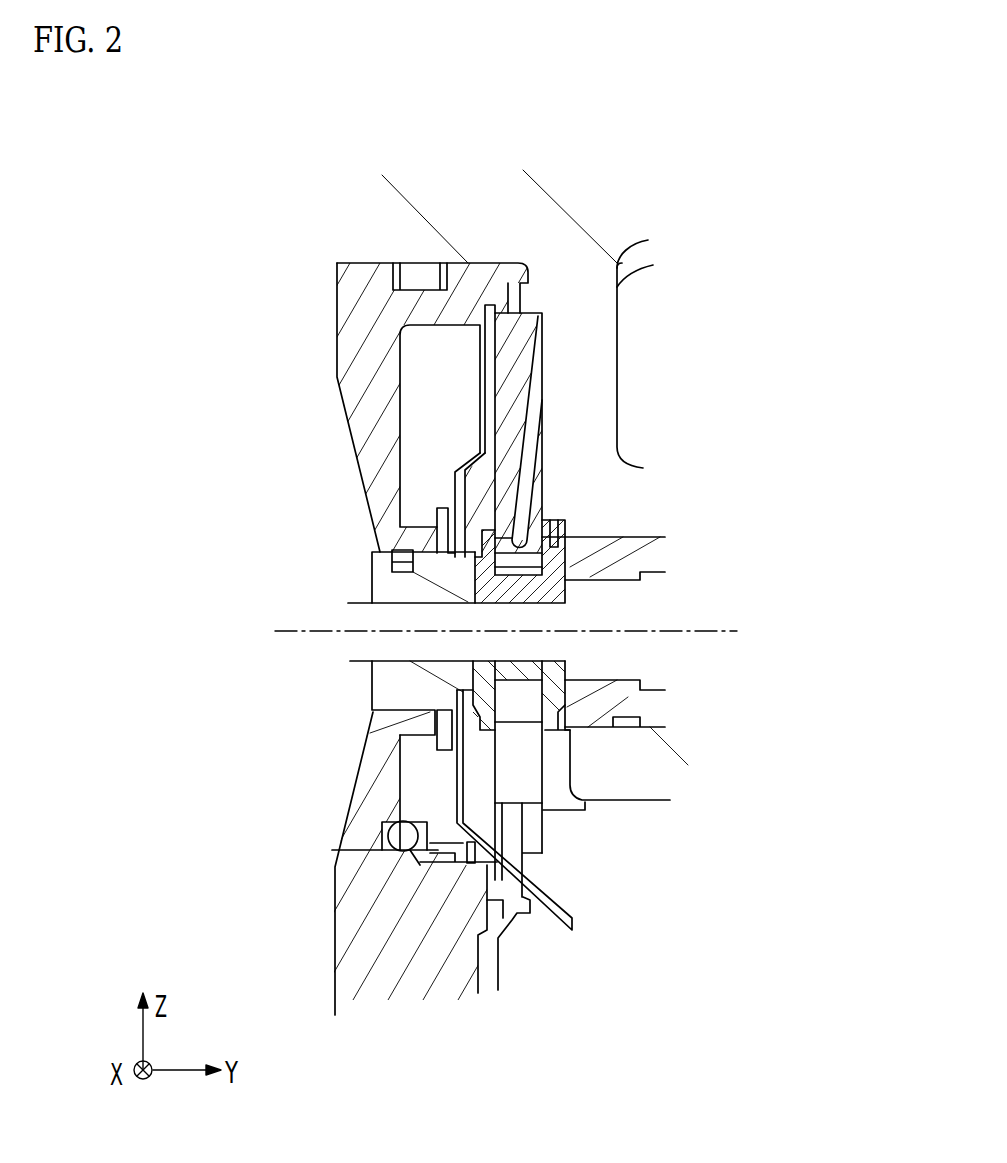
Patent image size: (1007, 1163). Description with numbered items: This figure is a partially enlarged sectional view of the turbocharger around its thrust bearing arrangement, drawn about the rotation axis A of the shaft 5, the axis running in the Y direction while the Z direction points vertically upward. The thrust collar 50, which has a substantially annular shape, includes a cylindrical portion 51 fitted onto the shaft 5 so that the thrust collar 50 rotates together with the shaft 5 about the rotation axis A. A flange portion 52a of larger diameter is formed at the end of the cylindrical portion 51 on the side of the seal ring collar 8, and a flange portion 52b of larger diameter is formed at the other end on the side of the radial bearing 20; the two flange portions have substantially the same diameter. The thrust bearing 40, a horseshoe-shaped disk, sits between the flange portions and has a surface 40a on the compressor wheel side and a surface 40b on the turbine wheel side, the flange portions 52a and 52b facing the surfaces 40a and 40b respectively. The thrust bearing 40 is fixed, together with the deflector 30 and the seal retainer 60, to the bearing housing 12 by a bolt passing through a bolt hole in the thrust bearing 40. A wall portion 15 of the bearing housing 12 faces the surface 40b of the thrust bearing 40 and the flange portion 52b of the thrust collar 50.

The shaft 5 is at (372, 612).
The seal ring collar 8 is at (382, 680).
The bearing housing 12 is at (598, 363).
The wall portion 15 is at (570, 753).
The radial bearing 20 is at (648, 557).
The deflector 30 is at (460, 782).
The thrust bearing 40 is at (537, 314).
The surface 40a is at (487, 390).
The surface 40b is at (543, 367).
The thrust collar 50 is at (567, 585).
The cylindrical portion 51 is at (520, 672).
The flange portion 52a is at (400, 522).
The flange portion 52b is at (563, 558).
The seal retainer 60 is at (373, 433).
The rotation axis A is at (710, 632).